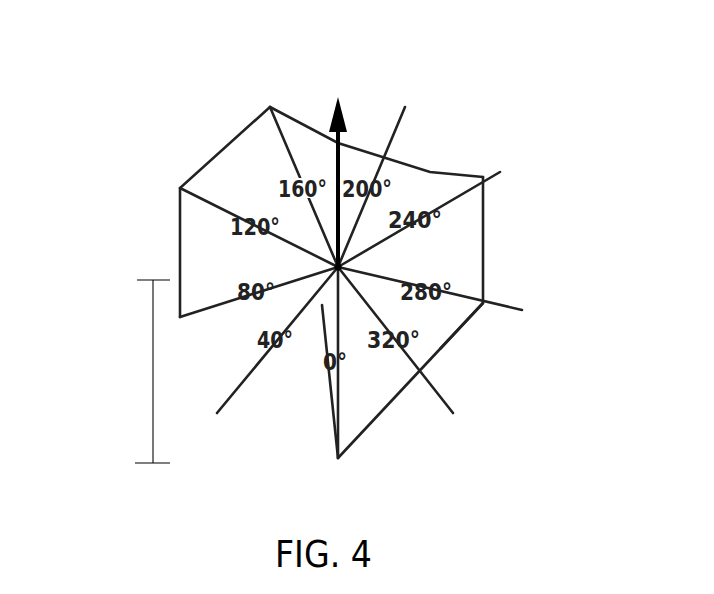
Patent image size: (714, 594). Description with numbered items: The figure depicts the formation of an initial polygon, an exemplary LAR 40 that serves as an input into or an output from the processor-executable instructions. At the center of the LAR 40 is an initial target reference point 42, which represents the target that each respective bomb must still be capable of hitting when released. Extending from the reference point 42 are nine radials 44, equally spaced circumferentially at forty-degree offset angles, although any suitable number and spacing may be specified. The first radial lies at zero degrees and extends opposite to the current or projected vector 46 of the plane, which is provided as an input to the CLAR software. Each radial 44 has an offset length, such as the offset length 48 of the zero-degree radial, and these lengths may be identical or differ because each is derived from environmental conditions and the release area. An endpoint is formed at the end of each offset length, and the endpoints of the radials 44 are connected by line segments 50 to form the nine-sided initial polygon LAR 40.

The LAR 40 is at (150, 117).
The initial target reference point 42 is at (338, 267).
The radials 44 is at (483, 303).
The current or projected vector of the plane 46 is at (343, 127).
The offset length 48 is at (152, 366).
The line segments 50 is at (432, 172).